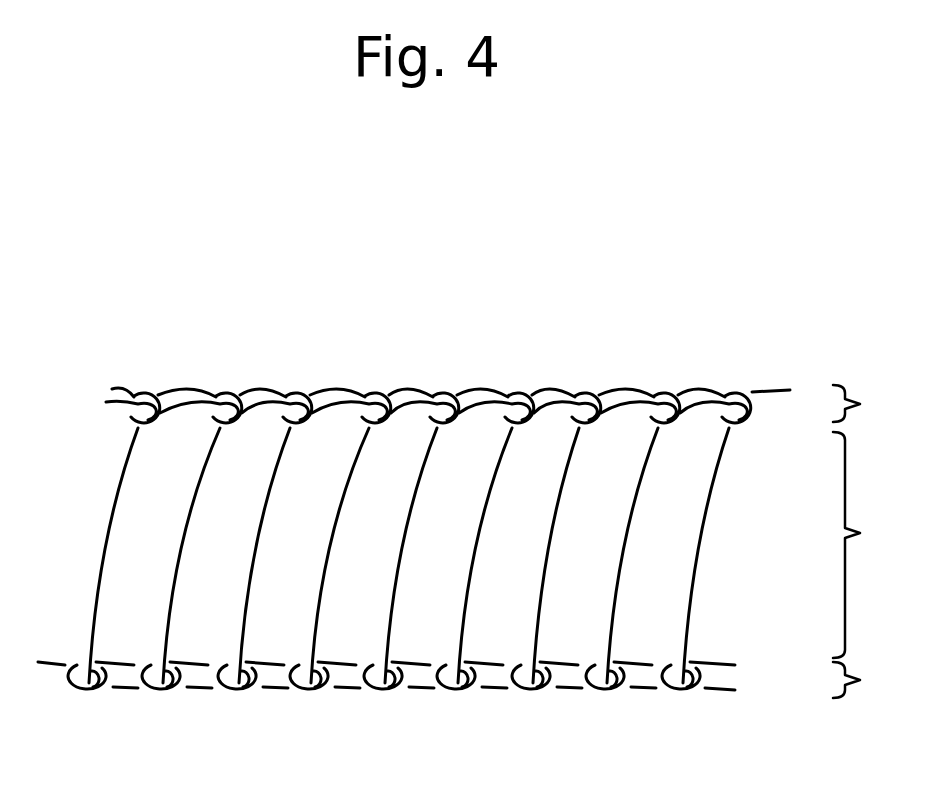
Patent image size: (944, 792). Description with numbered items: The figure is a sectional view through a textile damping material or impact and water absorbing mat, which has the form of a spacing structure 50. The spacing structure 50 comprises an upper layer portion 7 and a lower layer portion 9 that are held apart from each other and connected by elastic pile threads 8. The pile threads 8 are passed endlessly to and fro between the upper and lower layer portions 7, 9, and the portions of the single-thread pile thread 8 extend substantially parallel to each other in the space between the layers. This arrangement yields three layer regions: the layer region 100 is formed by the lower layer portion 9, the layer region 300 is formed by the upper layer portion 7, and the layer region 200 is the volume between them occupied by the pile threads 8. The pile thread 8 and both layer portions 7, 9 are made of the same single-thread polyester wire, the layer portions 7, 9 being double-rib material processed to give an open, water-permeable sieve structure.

The spacing structure 50 is at (287, 365).
The upper layer portion 7 is at (497, 387).
The pile threads 8 is at (108, 525).
The lower layer portion 9 is at (470, 684).
The layer region 300 is at (878, 404).
The layer region 200 is at (878, 545).
The layer region 100 is at (875, 682).